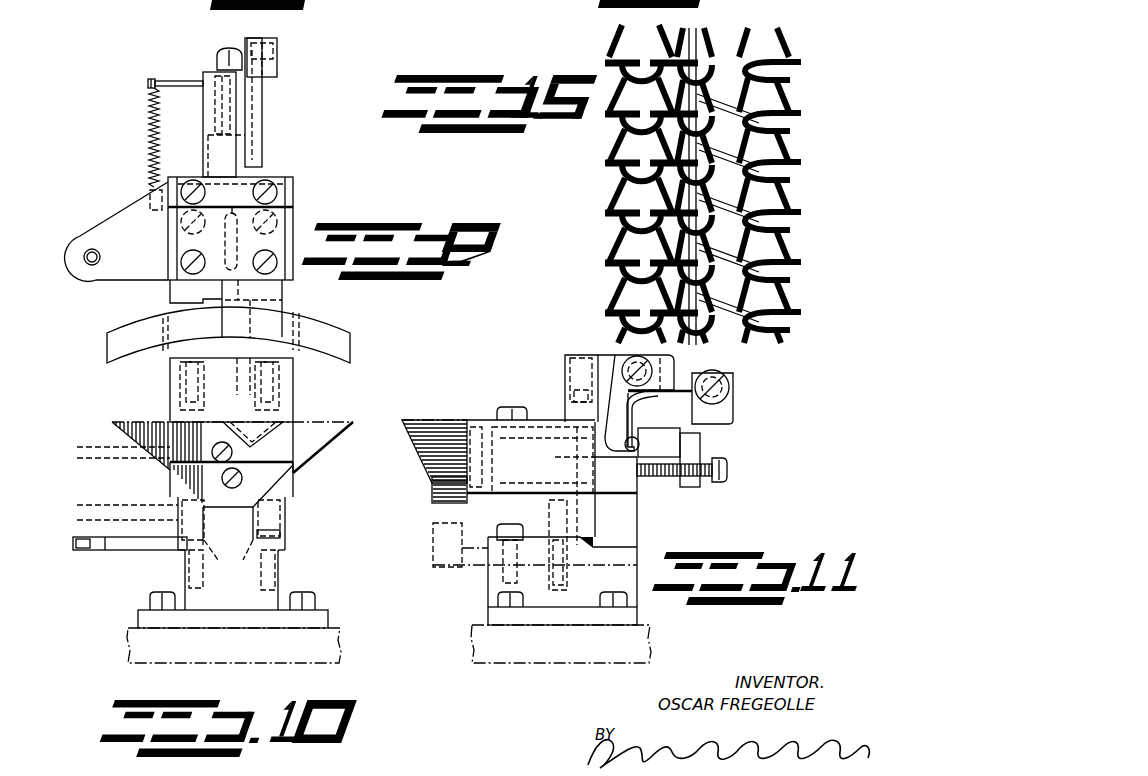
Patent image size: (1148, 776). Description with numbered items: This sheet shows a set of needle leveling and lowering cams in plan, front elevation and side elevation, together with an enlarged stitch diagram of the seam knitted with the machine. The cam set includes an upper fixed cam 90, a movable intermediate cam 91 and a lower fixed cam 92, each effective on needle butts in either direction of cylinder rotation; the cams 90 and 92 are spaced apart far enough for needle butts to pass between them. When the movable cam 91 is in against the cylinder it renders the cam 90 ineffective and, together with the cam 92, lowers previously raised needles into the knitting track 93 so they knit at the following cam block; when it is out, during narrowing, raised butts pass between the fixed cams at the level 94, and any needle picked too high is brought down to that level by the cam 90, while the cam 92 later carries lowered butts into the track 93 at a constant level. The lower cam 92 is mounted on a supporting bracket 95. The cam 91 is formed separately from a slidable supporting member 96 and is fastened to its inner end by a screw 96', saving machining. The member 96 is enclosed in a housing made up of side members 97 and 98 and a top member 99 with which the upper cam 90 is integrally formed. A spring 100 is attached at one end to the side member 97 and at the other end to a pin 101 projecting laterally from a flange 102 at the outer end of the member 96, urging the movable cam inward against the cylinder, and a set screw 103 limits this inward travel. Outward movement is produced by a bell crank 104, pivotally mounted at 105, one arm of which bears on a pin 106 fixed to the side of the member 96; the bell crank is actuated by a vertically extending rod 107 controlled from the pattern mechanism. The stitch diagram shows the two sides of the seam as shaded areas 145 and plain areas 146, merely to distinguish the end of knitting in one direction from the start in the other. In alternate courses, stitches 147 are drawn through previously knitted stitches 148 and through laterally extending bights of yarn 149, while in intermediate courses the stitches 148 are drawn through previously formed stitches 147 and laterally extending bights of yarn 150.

In FIG. 9, the upper fixed cam 90 is at (255, 316).
In FIG. 10, the upper fixed cam 90 is at (256, 430).
In FIG. 9, the movable intermediate cam 91 is at (330, 330).
In FIG. 10, the movable intermediate cam 91 is at (327, 440).
In FIG. 11, the movable intermediate cam 91 is at (421, 428).
In FIG. 10, the lower fixed cam 92 is at (256, 481).
In FIG. 11, the lower fixed cam 92 is at (432, 490).
In FIG. 10, the knitting track 93 is at (131, 512).
In FIG. 11, the knitting track 93 is at (440, 511).
In FIG. 10, the level 94 is at (86, 456).
In FIG. 11, the supporting bracket 95 is at (632, 516).
In FIG. 9, the slidable supporting member 96 is at (210, 112).
In FIG. 11, the slidable supporting member 96 is at (664, 436).
In FIG. 10, the screw 96' is at (233, 433).
In FIG. 9, the side member 97 is at (167, 244).
In FIG. 9, the side member 98 is at (292, 219).
In FIG. 9, the top member 99 is at (222, 270).
In FIG. 9, the spring 100 is at (149, 128).
In FIG. 9, the pin 101 is at (194, 78).
In FIG. 11, the flange 102 is at (701, 449).
In FIG. 11, the set screw 103 is at (729, 471).
In FIG. 9, the bell crank 104 is at (264, 100).
In FIG. 11, the bell crank 104 is at (680, 372).
In FIG. 11, the pivot 105 is at (625, 362).
In FIG. 11, the pin 106 is at (636, 437).
In FIG. 9, the vertically extending rod 107 is at (279, 50).
In FIG. 11, the vertically extending rod 107 is at (735, 396).
In FIG. 15, the shaded areas 145 is at (615, 142).
In FIG. 15, the plain areas 146 is at (797, 148).
In FIG. 15, the stitches 147 is at (686, 196).
In FIG. 15, the previously knitted stitches 148 is at (716, 120).
In FIG. 15, the laterally extending bights of yarn 149 is at (728, 172).
In FIG. 15, the laterally extending bights of yarn 150 is at (668, 150).